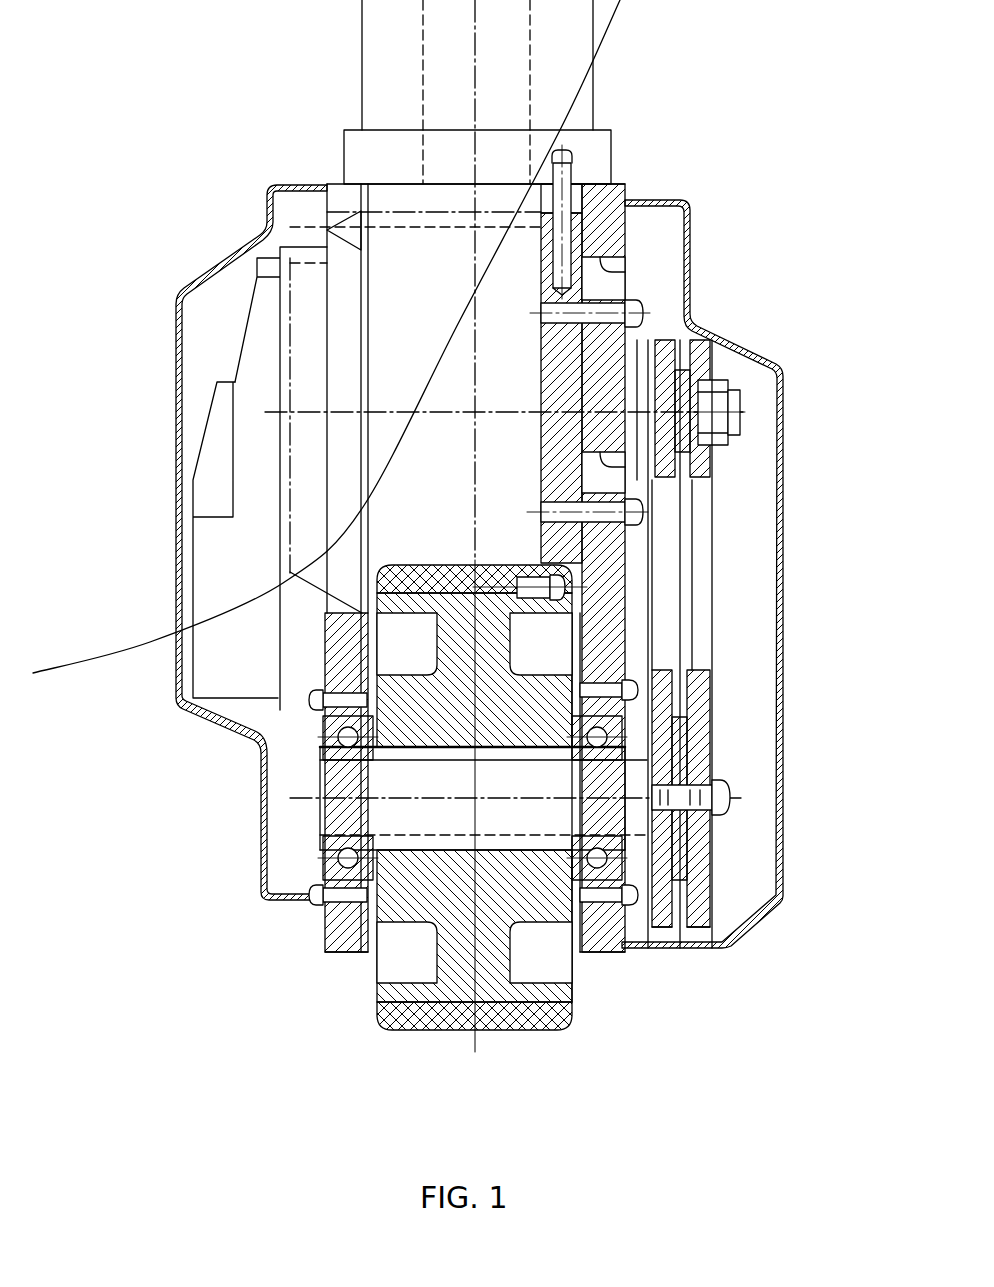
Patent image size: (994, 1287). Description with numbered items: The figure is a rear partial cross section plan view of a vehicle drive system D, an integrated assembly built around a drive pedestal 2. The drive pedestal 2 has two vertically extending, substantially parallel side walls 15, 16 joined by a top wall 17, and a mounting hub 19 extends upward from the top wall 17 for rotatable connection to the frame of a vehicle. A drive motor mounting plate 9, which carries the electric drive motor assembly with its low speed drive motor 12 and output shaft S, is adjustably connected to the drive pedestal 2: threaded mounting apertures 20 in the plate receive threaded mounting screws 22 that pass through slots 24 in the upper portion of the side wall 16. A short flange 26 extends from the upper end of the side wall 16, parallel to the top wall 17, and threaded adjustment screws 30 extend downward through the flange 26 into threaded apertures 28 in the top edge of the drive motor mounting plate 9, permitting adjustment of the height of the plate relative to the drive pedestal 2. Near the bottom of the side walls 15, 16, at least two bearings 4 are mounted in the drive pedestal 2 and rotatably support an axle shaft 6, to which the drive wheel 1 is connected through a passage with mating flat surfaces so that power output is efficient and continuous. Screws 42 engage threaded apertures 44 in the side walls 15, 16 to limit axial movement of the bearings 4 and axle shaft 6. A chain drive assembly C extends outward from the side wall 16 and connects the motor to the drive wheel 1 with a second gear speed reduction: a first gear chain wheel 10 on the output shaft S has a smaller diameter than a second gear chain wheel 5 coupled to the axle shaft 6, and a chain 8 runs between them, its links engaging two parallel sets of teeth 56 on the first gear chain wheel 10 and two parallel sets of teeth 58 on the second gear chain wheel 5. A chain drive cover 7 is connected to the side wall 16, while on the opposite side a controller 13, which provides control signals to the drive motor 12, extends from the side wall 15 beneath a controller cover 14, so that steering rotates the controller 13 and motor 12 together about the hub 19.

The drive wheel 1 is at (408, 1030).
The drive pedestal 2 is at (600, 968).
The bearings 4 is at (345, 850).
The second gear chain wheel 5 is at (710, 872).
The axle shaft 6 is at (632, 817).
The chain drive cover 7 is at (757, 932).
The chain 8 is at (702, 596).
The drive motor mounting plate 9 is at (690, 555).
The first gear chain wheel 10 is at (713, 465).
The low speed drive motor 12 is at (393, 250).
The controller 13 is at (232, 546).
The controller cover 14 is at (175, 713).
The side wall 15 is at (343, 955).
The side wall 16 is at (610, 960).
The top wall 17 is at (387, 197).
The mounting hub 19 is at (373, 47).
The threaded mounting apertures 20 is at (648, 330).
The threaded mounting screws 22 is at (680, 340).
The slots 24 is at (643, 305).
The flange 26 is at (610, 175).
The threaded apertures 28 is at (620, 257).
The threaded adjustment screws 30 is at (570, 150).
The screws 42 is at (310, 703).
The threaded apertures 44 is at (325, 667).
The two parallel sets of teeth 56 is at (662, 343).
The two parallel sets of teeth 58 is at (695, 932).
The output shaft S is at (740, 405).
The chain drive assembly C is at (754, 756).
The vehicle drive system D is at (838, 154).